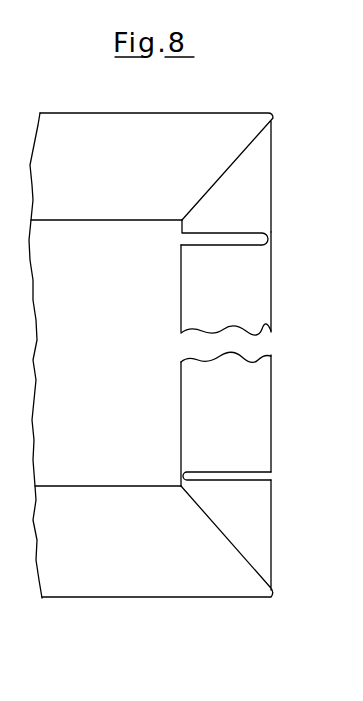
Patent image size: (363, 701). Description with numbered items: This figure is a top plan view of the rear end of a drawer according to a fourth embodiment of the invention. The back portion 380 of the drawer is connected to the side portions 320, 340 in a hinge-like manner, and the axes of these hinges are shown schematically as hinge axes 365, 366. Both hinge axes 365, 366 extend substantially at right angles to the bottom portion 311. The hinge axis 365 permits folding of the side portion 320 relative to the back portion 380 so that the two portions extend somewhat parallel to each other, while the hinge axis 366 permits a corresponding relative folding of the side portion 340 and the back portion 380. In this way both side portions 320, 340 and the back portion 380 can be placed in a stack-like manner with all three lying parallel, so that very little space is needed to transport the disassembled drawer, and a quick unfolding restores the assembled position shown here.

The bottom portion 311 is at (105, 364).
The side portion 320 is at (213, 127).
The side portion 340 is at (207, 580).
The hinge axis 365 is at (272, 238).
The hinge axis 366 is at (182, 476).
The back portion 380 is at (257, 287).